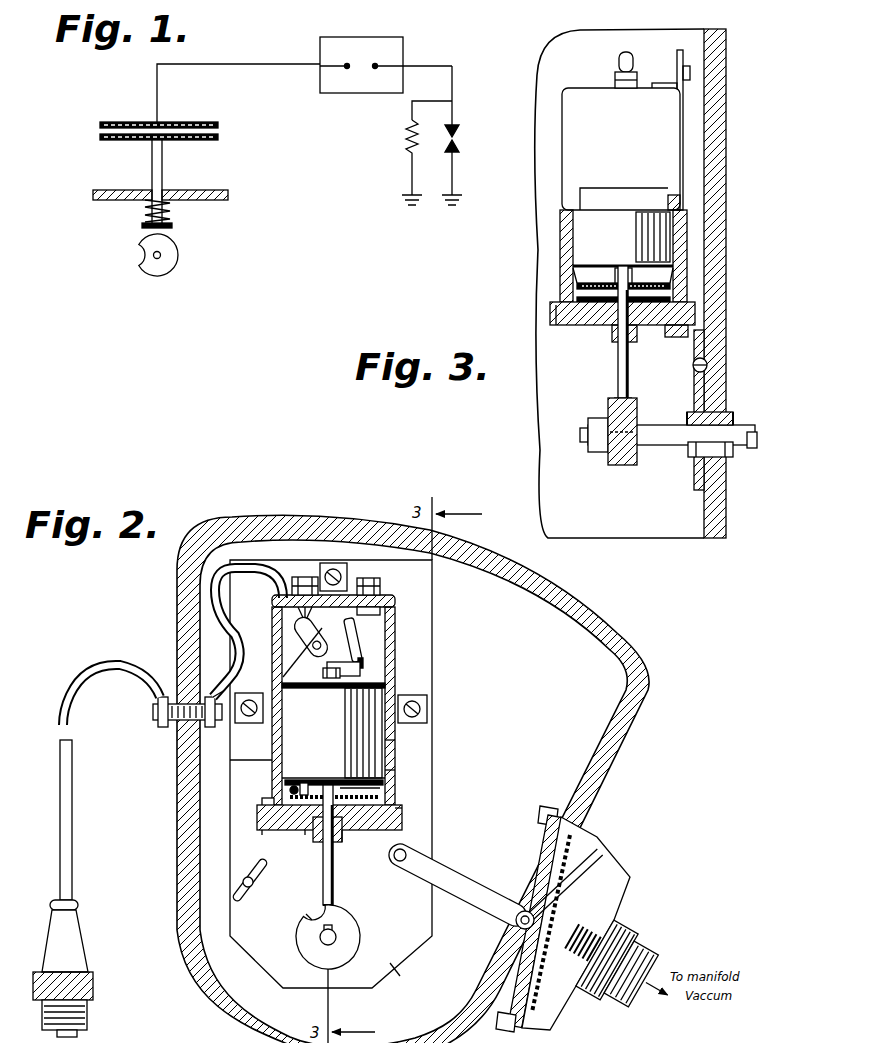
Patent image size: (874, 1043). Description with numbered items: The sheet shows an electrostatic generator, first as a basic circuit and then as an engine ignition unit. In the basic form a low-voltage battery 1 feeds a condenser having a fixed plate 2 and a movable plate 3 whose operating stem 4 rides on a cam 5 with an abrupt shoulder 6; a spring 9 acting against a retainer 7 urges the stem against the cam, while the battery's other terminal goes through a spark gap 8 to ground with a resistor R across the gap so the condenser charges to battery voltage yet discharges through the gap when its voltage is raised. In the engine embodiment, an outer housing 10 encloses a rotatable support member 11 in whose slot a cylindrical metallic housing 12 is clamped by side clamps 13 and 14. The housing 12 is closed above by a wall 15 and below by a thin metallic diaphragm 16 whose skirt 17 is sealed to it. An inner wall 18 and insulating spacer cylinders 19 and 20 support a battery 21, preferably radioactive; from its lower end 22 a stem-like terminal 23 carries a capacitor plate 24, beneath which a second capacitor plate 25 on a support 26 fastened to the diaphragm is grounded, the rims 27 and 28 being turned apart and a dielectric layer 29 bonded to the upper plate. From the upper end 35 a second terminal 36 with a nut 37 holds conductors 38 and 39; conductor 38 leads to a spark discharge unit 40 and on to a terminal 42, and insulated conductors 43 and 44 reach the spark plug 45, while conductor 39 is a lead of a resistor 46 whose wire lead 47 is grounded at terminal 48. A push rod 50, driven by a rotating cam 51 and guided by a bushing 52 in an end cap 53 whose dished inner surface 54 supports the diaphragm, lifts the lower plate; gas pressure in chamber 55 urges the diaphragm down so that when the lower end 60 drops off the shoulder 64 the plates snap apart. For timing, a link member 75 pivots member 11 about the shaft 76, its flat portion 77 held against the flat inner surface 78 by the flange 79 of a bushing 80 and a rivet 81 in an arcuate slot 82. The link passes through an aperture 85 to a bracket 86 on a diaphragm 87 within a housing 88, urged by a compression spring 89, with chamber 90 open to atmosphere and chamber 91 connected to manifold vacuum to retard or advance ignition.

In FIG. 1, the battery 1 is at (398, 51).
In FIG. 1, the fixed plate 2 is at (206, 122).
In FIG. 1, the movable plate 3 is at (103, 138).
In FIG. 1, the operating stem 4 is at (153, 171).
In FIG. 1, the cam 5 is at (170, 262).
In FIG. 1, the shoulder 6 is at (142, 253).
In FIG. 1, the retainer 7 is at (175, 226).
In FIG. 1, the spark gap 8 is at (462, 137).
In FIG. 1, the spring 9 is at (145, 211).
In FIG. 1, the resistor R is at (412, 140).
In FIG. 3, the housing 10 is at (730, 340).
In FIG. 2, the housing 10 is at (186, 997).
In FIG. 3, the rotatable support member 11 is at (665, 66).
In FIG. 2, the rotatable support member 11 is at (438, 848).
In FIG. 3, the cylindrical metallic housing 12 is at (570, 88).
In FIG. 2, the cylindrical metallic housing 12 is at (245, 758).
In FIG. 2, the side clamp 13 is at (232, 721).
In FIG. 3, the side clamp 14 is at (627, 190).
In FIG. 2, the side clamp 14 is at (428, 705).
In FIG. 2, the wall 15 is at (318, 589).
In FIG. 3, the diaphragm 16 is at (575, 322).
In FIG. 2, the diaphragm 16 is at (260, 832).
In FIG. 2, the skirt 17 is at (276, 803).
In FIG. 2, the inner wall 18 is at (398, 741).
In FIG. 2, the insulating spacer cylinder 19 is at (393, 770).
In FIG. 2, the insulating spacer cylinder 20 is at (378, 654).
In FIG. 3, the battery 21 is at (603, 232).
In FIG. 2, the battery 21 is at (278, 733).
In FIG. 3, the lower end 22 is at (578, 272).
In FIG. 2, the lower end 22 is at (291, 776).
In FIG. 3, the stem-like terminal 23 is at (636, 270).
In FIG. 2, the stem-like terminal 23 is at (345, 779).
In FIG. 3, the capacitor plate 24 is at (580, 285).
In FIG. 2, the capacitor plate 24 is at (316, 778).
In FIG. 3, the second capacitor plate 25 is at (592, 322).
In FIG. 2, the second capacitor plate 25 is at (282, 836).
In FIG. 2, the support 26 is at (309, 840).
In FIG. 2, the rim 27 is at (285, 790).
In FIG. 2, the rim 28 is at (262, 814).
In FIG. 3, the dielectric layer 29 is at (577, 299).
In FIG. 2, the dielectric layer 29 is at (378, 797).
In FIG. 2, the upper end 35 is at (238, 688).
In FIG. 2, the second terminal 36 is at (385, 664).
In FIG. 2, the nut 37 is at (333, 702).
In FIG. 2, the conductor 38 is at (304, 679).
In FIG. 2, the conductor 39 is at (345, 673).
In FIG. 2, the spark discharge unit 40 is at (285, 635).
In FIG. 2, the terminal 42 is at (278, 601).
In FIG. 3, the insulated conductor 43 is at (622, 70).
In FIG. 2, the insulated conductor 43 is at (224, 597).
In FIG. 2, the insulated conductor 44 is at (70, 862).
In FIG. 2, the spark plug 45 is at (72, 953).
In FIG. 2, the resistor 46 is at (362, 641).
In FIG. 2, the wire lead 47 is at (390, 607).
In FIG. 2, the terminal 48 is at (372, 597).
In FIG. 3, the push rod 50 is at (630, 368).
In FIG. 2, the push rod 50 is at (324, 876).
In FIG. 3, the rotating cam 51 is at (603, 461).
In FIG. 2, the rotating cam 51 is at (362, 936).
In FIG. 3, the bushing 52 is at (612, 338).
In FIG. 2, the bushing 52 is at (339, 841).
In FIG. 3, the end cap 53 is at (552, 316).
In FIG. 2, the end cap 53 is at (400, 816).
In FIG. 2, the inner surface 54 is at (352, 839).
In FIG. 3, the chamber 55 is at (687, 275).
In FIG. 2, the chamber 55 is at (372, 782).
In FIG. 3, the lower end 60 is at (610, 400).
In FIG. 2, the lower end 60 is at (334, 897).
In FIG. 2, the shoulder 64 is at (302, 917).
In FIG. 2, the link member 75 is at (452, 879).
In FIG. 3, the shaft 76 is at (660, 441).
In FIG. 2, the shaft 76 is at (331, 946).
In FIG. 3, the flat portion 77 is at (699, 382).
In FIG. 2, the flat portion 77 is at (406, 976).
In FIG. 3, the flat inner surface 78 is at (718, 424).
In FIG. 2, the flat inner surface 78 is at (520, 821).
In FIG. 3, the flange 79 is at (690, 449).
In FIG. 3, the bushing 80 is at (722, 415).
In FIG. 3, the rivet 81 is at (720, 365).
In FIG. 2, the rivet 81 is at (236, 872).
In FIG. 2, the slot 82 is at (240, 889).
In FIG. 2, the aperture 85 is at (516, 919).
In FIG. 2, the bracket 86 is at (522, 936).
In FIG. 2, the diaphragm 87 is at (608, 974).
In FIG. 2, the housing 88 is at (535, 1028).
In FIG. 2, the compression spring 89 is at (582, 936).
In FIG. 2, the chamber 90 is at (567, 872).
In FIG. 2, the chamber 91 is at (612, 866).